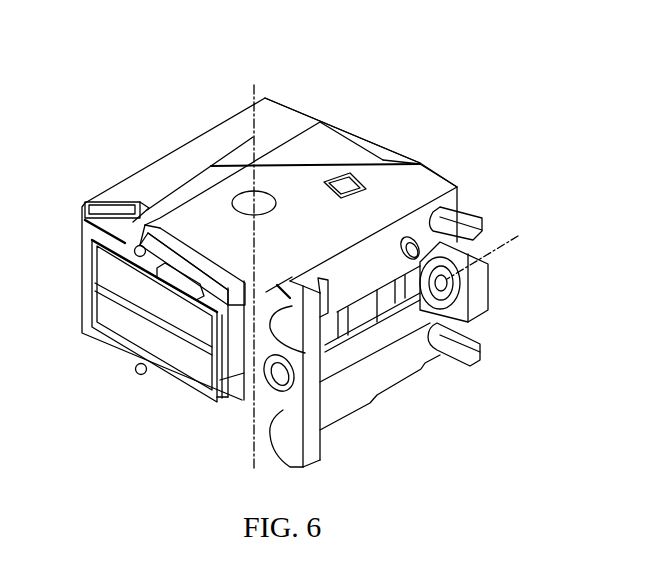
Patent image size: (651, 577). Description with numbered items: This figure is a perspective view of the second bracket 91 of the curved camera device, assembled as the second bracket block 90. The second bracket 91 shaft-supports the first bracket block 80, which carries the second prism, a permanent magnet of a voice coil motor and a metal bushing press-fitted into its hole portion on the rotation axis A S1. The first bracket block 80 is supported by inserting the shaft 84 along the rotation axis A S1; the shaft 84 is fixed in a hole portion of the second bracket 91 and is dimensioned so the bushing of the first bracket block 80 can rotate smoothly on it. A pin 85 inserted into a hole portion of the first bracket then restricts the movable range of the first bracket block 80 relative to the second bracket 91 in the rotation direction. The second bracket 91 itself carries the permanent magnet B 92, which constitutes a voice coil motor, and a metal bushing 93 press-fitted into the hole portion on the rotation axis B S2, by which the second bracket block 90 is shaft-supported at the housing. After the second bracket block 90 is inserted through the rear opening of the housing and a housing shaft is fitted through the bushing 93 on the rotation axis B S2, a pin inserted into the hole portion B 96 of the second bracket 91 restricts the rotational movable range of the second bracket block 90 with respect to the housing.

The first bracket block 80 is at (275, 123).
The shaft 84 is at (237, 207).
The pin 85 is at (349, 186).
The second bracket block 90 is at (282, 282).
The second bracket 91 is at (444, 167).
The permanent magnet B 92 is at (185, 358).
The bushing 93 is at (362, 352).
The hole portion B 96 is at (136, 257).
The rotation axis A S1 is at (254, 267).
The rotation axis B S2 is at (491, 254).